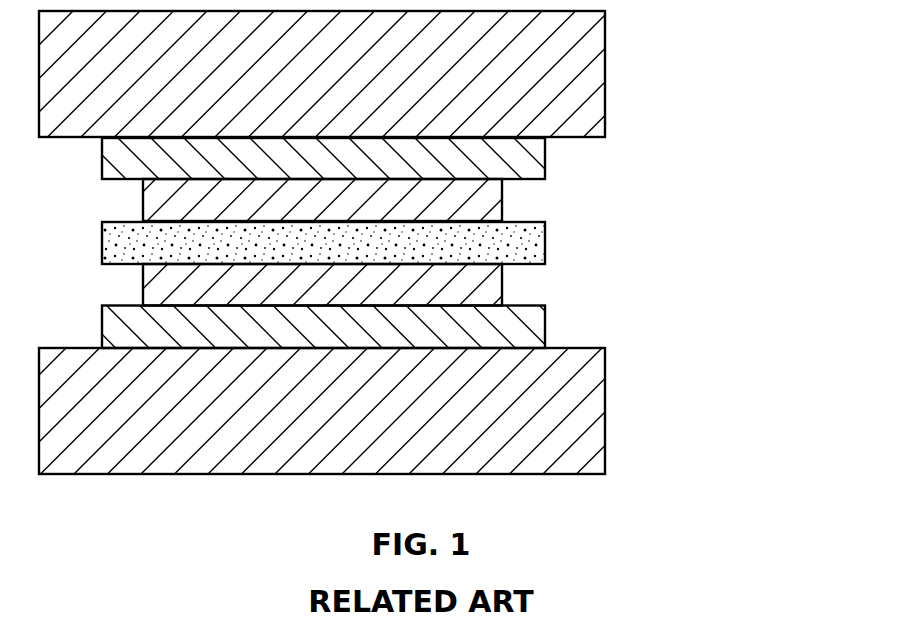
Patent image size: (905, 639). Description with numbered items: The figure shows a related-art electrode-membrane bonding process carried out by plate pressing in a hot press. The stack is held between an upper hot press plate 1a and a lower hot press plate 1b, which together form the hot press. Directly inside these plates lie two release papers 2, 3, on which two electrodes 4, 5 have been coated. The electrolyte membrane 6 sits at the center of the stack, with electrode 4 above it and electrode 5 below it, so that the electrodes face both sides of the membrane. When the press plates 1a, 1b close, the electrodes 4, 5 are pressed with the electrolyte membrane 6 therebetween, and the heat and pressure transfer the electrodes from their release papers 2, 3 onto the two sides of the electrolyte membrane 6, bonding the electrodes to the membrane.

The hot press plate 1a is at (605, 68).
The hot press plate 1b is at (605, 393).
The release paper 2 is at (542, 162).
The release paper 3 is at (542, 323).
The electrode 4 is at (490, 207).
The electrode 5 is at (490, 285).
The electrolyte membrane 6 is at (545, 240).